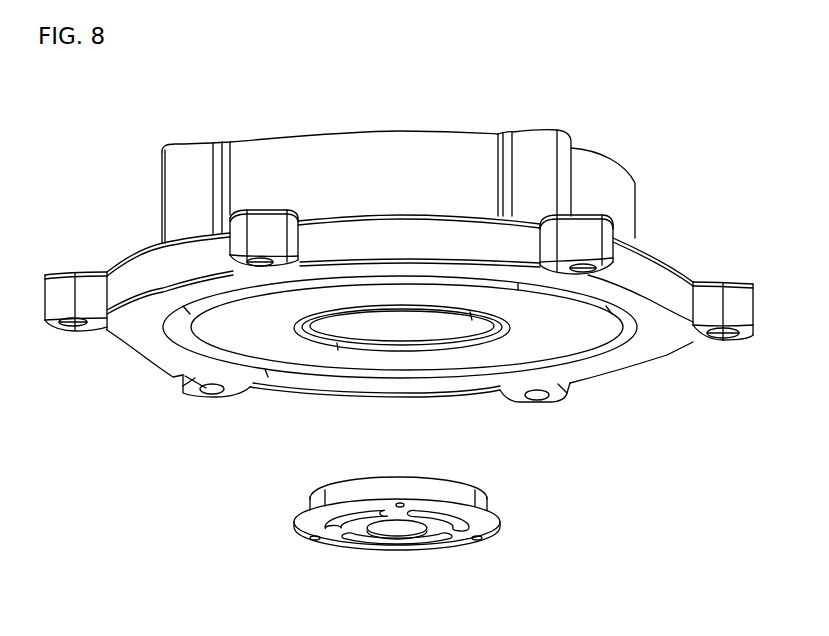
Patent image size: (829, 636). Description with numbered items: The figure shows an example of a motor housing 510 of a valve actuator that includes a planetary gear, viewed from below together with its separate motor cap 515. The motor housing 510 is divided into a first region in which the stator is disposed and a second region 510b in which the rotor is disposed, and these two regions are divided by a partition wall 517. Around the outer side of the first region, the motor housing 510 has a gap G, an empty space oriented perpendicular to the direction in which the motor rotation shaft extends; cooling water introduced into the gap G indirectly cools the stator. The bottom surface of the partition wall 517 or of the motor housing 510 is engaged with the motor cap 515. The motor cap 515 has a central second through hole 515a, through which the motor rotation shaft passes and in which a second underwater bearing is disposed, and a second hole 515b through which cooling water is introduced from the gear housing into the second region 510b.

The motor housing 510 is at (399, 294).
The second region 510b is at (355, 320).
The partition wall 517 is at (443, 325).
The gap G is at (180, 329).
The motor cap 515 is at (415, 537).
The second through hole 515a is at (397, 528).
The second hole 515b is at (457, 528).